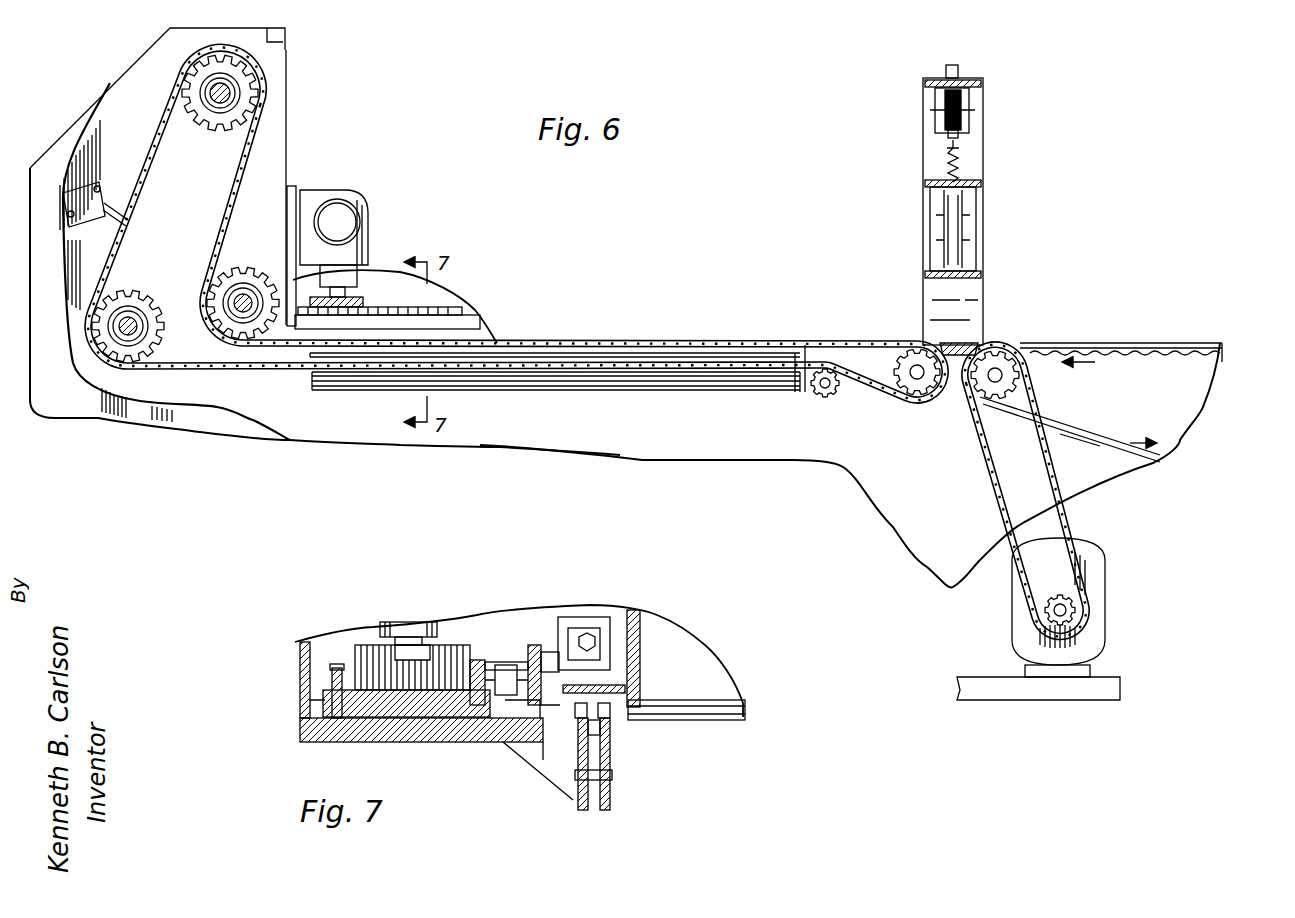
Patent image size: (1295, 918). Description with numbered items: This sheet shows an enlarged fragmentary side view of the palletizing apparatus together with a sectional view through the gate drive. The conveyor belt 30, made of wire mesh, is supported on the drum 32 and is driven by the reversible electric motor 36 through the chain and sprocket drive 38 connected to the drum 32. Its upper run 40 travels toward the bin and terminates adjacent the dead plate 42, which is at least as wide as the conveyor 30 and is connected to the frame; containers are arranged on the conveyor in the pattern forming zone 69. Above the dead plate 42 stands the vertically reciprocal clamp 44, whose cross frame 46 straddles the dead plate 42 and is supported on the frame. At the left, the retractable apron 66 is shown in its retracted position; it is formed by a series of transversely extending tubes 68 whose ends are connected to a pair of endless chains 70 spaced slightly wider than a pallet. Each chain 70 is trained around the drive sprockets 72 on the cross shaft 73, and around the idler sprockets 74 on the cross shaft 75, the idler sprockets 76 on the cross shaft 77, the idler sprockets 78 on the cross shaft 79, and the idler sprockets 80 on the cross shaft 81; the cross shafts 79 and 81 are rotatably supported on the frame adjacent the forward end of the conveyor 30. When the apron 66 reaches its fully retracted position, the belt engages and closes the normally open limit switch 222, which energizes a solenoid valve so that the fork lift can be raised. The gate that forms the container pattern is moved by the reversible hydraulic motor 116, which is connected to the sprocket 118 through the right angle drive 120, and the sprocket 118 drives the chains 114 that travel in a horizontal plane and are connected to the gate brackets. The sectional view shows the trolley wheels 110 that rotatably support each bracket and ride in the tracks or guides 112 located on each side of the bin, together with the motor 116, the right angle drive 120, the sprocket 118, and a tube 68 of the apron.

In FIG. 6, the conveyor belt 30 is at (1262, 332).
In FIG. 6, the pulley or drum 32 is at (1024, 348).
In FIG. 6, the reversible electric motor 36 is at (1092, 558).
In FIG. 6, the chain and sprocket drive 38 is at (995, 480).
In FIG. 6, the upper run 40 is at (1120, 357).
In FIG. 6, the dead plate 42 is at (972, 345).
In FIG. 6, the vertically reciprocal clamp 44 is at (996, 200).
In FIG. 6, the cross frame 46 is at (977, 128).
In FIG. 6, the retractable apron 66 is at (241, 212).
In FIG. 6, the tubes 68 is at (205, 258).
In FIG. 7, the tubes 68 is at (687, 705).
In FIG. 6, the pattern forming zone 69 is at (1102, 278).
In FIG. 6, the endless chains 70 is at (220, 225).
In FIG. 7, the endless chains 70 is at (610, 743).
In FIG. 6, the drive sprockets 72 is at (232, 110).
In FIG. 6, the cross shaft 73 is at (226, 83).
In FIG. 6, the idler sprockets 74 is at (97, 382).
In FIG. 6, the cross shaft 75 is at (129, 322).
In FIG. 6, the idler sprockets 76 is at (230, 343).
In FIG. 6, the cross shaft 77 is at (243, 298).
In FIG. 6, the idler sprockets 78 is at (821, 399).
In FIG. 6, the cross shaft 79 is at (806, 388).
In FIG. 6, the idler sprockets 80 is at (918, 385).
In FIG. 6, the cross shaft 81 is at (915, 366).
In FIG. 7, the trolley wheels 110 is at (533, 682).
In FIG. 7, the tracks or guides 112 is at (538, 642).
In FIG. 7, the chains 114 is at (330, 676).
In FIG. 6, the reversible hydraulic motor 116 is at (342, 224).
In FIG. 7, the reversible hydraulic motor 116 is at (408, 618).
In FIG. 7, the sprocket 118 is at (433, 663).
In FIG. 6, the right angle drive 120 is at (367, 248).
In FIG. 7, the right angle drive 120 is at (382, 627).
In FIG. 6, the limit switch 222 is at (82, 193).